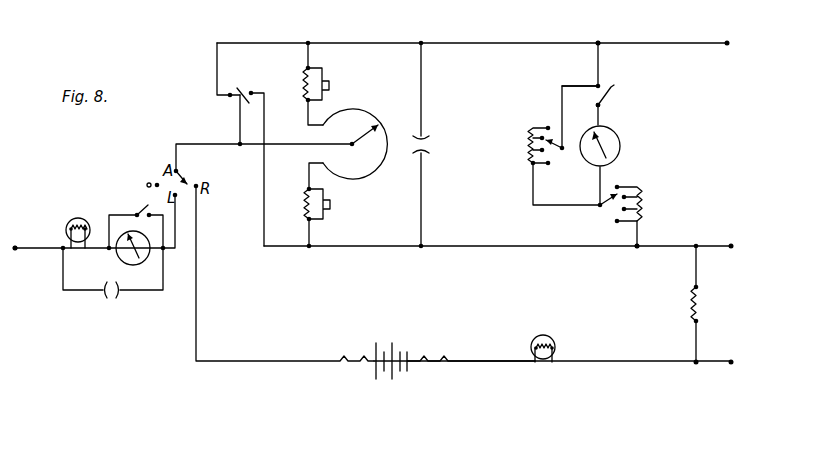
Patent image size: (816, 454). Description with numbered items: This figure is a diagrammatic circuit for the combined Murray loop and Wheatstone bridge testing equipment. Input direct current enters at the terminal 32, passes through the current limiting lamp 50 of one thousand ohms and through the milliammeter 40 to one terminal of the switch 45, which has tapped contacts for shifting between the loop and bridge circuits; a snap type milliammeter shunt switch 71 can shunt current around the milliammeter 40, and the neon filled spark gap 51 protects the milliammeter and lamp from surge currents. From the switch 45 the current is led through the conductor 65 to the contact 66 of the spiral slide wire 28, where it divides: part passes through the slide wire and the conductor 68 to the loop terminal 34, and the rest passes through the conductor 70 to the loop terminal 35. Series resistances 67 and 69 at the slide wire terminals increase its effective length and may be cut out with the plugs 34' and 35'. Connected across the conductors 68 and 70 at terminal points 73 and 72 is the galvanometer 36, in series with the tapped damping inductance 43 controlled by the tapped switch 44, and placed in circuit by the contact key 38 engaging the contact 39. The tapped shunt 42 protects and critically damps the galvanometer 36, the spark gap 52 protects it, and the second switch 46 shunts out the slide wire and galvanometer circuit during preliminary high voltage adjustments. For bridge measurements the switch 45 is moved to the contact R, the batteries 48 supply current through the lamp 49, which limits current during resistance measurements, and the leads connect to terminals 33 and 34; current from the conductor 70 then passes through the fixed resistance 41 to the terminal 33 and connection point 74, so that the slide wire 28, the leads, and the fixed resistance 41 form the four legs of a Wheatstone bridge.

The spiral slide wire 28 is at (370, 110).
The terminal 32 is at (16, 250).
The terminal 33 is at (732, 364).
The loop terminal 34 is at (716, 60).
The plug 34' is at (352, 69).
The loop terminal 35 is at (713, 230).
The plug 35' is at (352, 195).
The galvanometer 36 is at (616, 134).
The contact key 38 is at (613, 92).
The contact 39 is at (596, 85).
The milliammeter 40 is at (140, 260).
The fixed resistance 41 is at (696, 306).
The tapped shunt 42 is at (540, 125).
The damping inductance 43 is at (644, 197).
The tapped switch 44 is at (609, 202).
The switch 45 is at (170, 173).
The second switch 46 is at (242, 92).
The batteries 48 is at (386, 343).
The lamp 49 is at (552, 340).
The current limiting lamp 50 is at (78, 218).
The spark gap member 51 is at (112, 304).
The spark gap member 52 is at (432, 143).
The conductor 65 is at (232, 143).
The contact 66 is at (366, 140).
The series resistance 67 is at (308, 84).
The conductor 68 is at (402, 42).
The series resistance 69 is at (307, 204).
The conductor 70 is at (371, 248).
The milliammeter shunt switch 71 is at (142, 212).
The terminal point 72 is at (637, 249).
The terminal point 73 is at (598, 42).
The connection point 74 is at (696, 364).